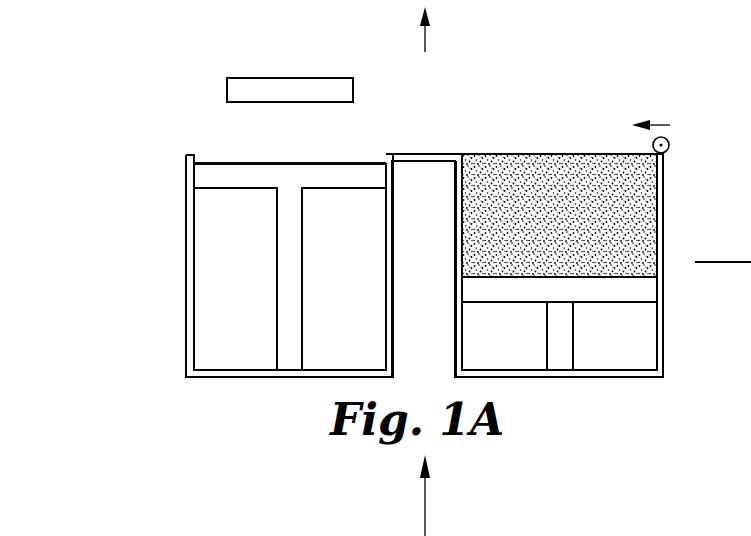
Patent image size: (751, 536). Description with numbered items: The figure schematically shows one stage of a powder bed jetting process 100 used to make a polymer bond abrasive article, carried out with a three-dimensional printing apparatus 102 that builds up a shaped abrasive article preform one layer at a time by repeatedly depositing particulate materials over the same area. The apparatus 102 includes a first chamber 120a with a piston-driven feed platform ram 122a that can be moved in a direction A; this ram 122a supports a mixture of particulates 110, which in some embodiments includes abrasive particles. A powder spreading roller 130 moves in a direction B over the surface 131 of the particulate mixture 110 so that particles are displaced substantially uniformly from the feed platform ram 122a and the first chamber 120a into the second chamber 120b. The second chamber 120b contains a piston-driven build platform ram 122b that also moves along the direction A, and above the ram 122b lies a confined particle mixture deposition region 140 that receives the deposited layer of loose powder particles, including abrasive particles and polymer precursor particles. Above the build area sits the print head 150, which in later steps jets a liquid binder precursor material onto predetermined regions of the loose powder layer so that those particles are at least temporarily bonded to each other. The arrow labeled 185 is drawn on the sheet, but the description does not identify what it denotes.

The powder bed jetting process 100 is at (157, 87).
The three-dimensional printing apparatus 102 is at (157, 323).
The mixture of particulates 110 is at (643, 195).
The first chamber 120a is at (663, 318).
The second chamber 120b is at (186, 245).
The feed platform ram 122a is at (657, 291).
The build platform ram 122b is at (197, 178).
The powder spreading roller 130 is at (669, 144).
The surface 131 is at (523, 153).
The confined particle mixture deposition region 140 is at (203, 160).
The print head 150 is at (343, 90).
The direction arrow 185 is at (425, 528).